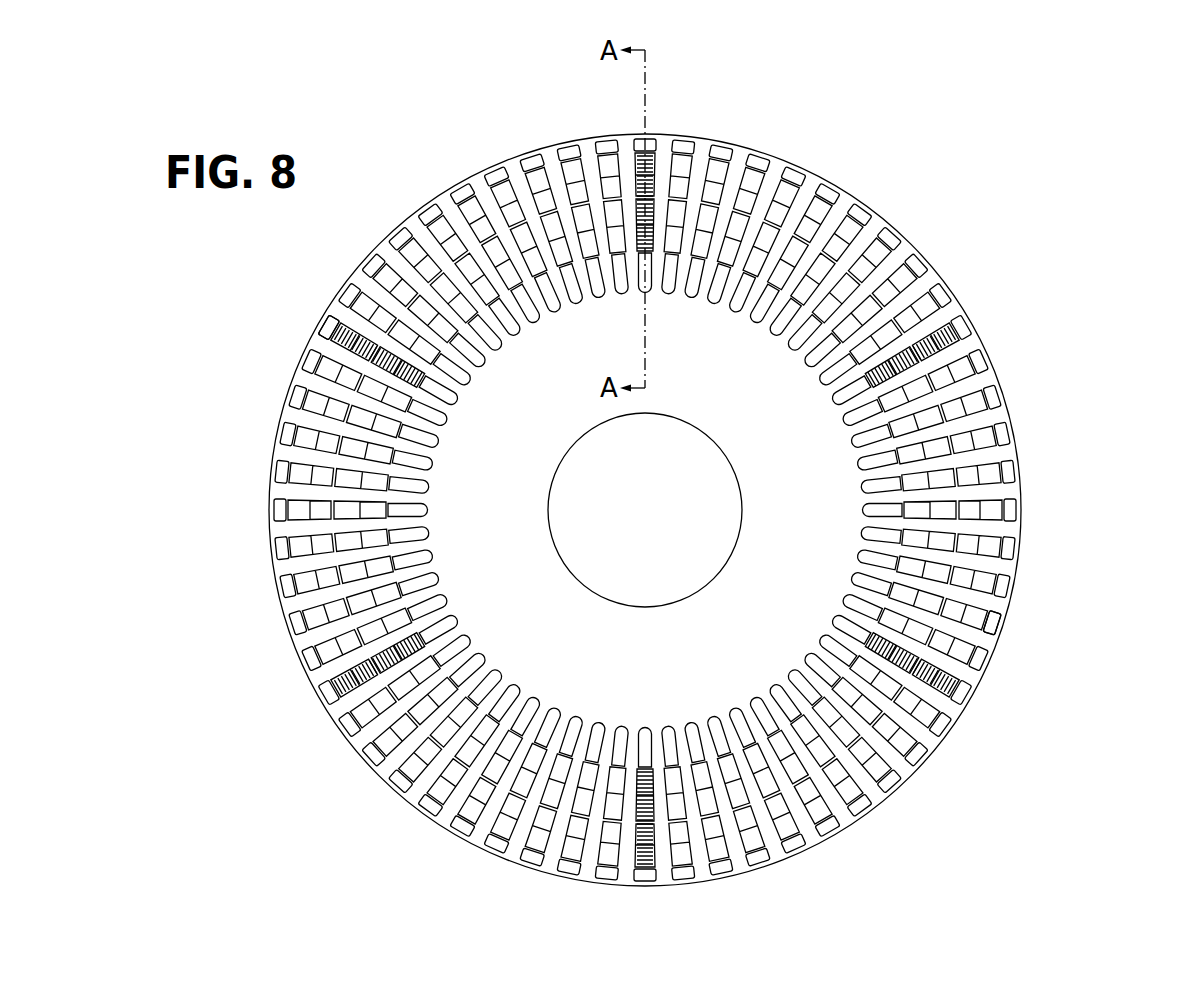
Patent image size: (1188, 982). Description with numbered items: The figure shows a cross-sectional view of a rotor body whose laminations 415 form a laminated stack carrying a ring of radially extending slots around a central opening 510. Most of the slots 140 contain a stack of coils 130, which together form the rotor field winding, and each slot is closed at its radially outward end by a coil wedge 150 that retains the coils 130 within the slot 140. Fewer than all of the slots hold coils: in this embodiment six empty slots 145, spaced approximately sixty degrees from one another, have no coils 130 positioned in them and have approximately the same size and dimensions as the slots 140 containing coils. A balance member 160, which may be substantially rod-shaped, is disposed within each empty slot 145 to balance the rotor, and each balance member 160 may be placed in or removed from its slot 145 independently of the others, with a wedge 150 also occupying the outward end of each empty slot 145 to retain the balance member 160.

The laminations 415 is at (665, 510).
The slots 140 is at (1035, 552).
The empty slots 145 is at (300, 316).
The balance members 160 is at (362, 352).
The coil wedges 150 is at (1005, 623).
The coils 130 is at (961, 616).
The central bore 510 is at (669, 519).